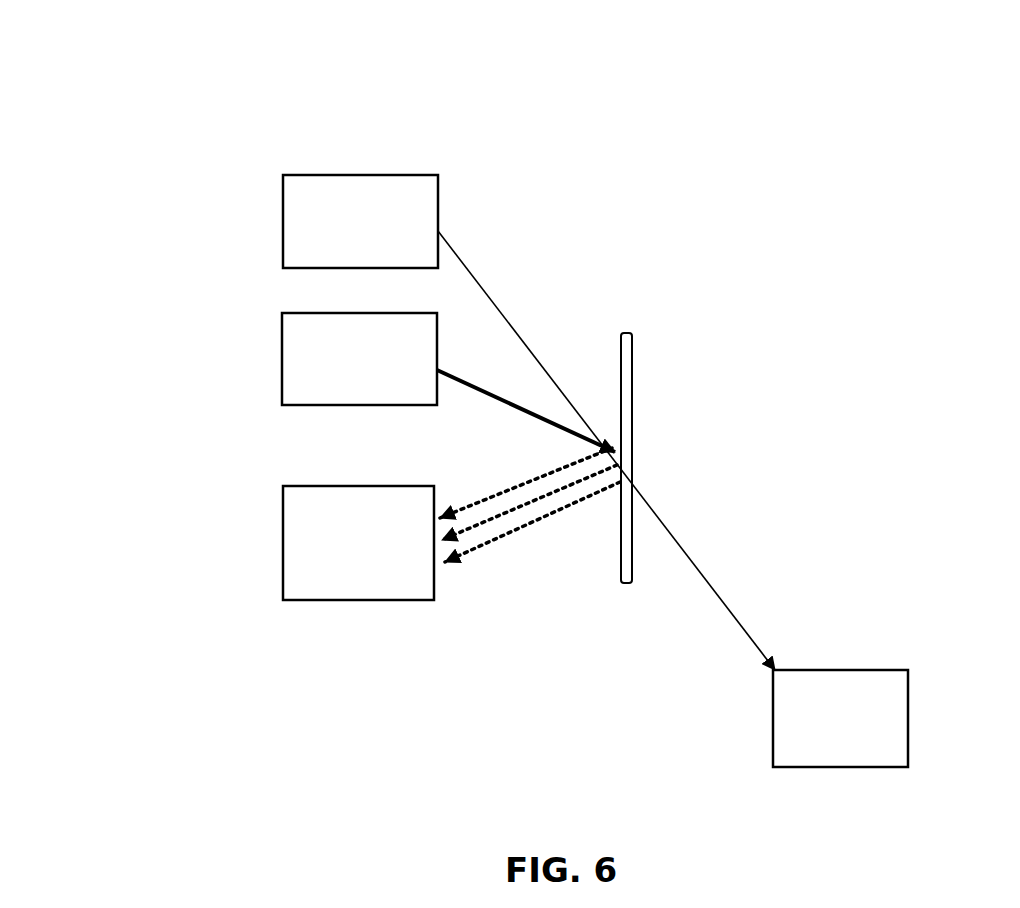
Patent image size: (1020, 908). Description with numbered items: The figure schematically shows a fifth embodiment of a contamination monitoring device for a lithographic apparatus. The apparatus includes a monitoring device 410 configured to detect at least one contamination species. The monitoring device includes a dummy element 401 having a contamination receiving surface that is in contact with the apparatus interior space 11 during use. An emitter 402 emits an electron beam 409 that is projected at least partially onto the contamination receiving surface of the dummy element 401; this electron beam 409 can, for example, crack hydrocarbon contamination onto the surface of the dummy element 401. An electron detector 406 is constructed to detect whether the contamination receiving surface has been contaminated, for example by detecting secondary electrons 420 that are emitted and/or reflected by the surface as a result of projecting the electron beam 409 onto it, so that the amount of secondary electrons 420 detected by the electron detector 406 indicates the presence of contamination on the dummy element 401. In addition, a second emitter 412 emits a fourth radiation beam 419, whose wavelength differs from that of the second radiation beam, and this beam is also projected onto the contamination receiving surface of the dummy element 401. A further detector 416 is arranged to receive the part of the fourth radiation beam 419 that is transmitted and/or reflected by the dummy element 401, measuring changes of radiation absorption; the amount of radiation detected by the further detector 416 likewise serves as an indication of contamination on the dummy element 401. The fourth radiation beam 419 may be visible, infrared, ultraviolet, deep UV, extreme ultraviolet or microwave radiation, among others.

The monitoring device 410 is at (183, 248).
The second emitter 412 is at (360, 221).
The emitter 402 is at (359, 359).
The electron detector 406 is at (358, 543).
The further detector 416 is at (840, 718).
The dummy element 401 is at (632, 360).
The fourth radiation beam 419 is at (515, 328).
The electron beam 409 is at (512, 405).
The secondary electrons 420 is at (493, 535).
The apparatus interior space 11 is at (581, 347).